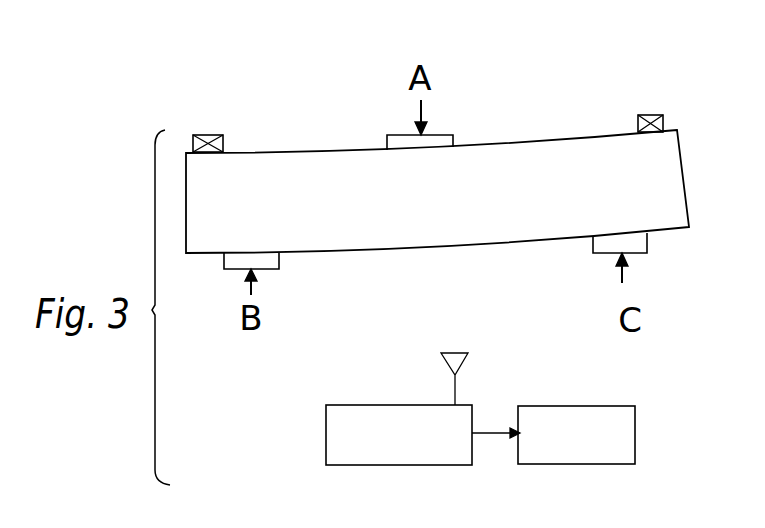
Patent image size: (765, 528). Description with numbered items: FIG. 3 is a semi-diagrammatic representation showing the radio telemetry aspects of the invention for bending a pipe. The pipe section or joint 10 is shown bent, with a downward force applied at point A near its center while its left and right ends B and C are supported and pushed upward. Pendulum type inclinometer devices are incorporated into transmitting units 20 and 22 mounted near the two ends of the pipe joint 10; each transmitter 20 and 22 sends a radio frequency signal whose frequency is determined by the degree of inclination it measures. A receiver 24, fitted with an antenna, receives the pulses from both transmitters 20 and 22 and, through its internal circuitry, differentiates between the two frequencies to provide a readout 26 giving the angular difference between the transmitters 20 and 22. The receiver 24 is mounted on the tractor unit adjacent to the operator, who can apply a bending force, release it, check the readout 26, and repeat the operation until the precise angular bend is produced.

The pipe section or joint 10 is at (515, 157).
The transmitting unit 20 is at (207, 135).
The transmitting unit 22 is at (645, 115).
The receiver 24 is at (399, 410).
The readout 26 is at (599, 410).